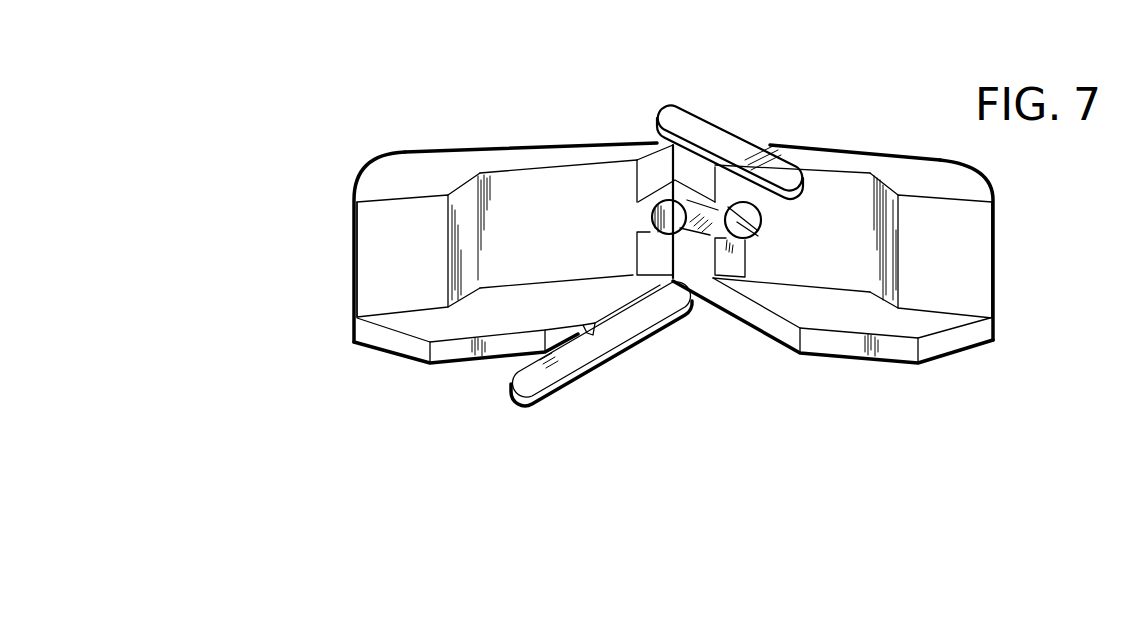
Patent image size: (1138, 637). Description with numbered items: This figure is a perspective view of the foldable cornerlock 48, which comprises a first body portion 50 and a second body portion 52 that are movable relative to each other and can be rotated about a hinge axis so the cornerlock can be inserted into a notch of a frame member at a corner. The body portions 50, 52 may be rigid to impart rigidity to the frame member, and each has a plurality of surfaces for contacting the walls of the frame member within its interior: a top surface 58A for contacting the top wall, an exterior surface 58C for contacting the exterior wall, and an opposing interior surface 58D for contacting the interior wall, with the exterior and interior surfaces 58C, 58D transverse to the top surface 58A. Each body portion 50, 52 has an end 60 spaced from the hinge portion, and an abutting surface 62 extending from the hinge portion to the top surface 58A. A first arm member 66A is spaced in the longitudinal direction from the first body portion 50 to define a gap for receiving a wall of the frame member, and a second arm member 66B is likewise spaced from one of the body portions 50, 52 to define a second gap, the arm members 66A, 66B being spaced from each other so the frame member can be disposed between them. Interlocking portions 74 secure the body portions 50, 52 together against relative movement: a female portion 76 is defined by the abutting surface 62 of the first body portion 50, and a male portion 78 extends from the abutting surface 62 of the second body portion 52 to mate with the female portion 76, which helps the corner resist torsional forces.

The foldable cornerlock 48 is at (562, 118).
The first body portion 50 is at (510, 212).
The second body portion 52 is at (828, 188).
The top surface 58A is at (427, 266).
The exterior surface 58C is at (452, 368).
The interior surface 58D is at (488, 152).
The end 60 is at (316, 268).
The abutting surface 62 is at (665, 266).
The first arm member 66A is at (548, 370).
The second arm member 66B is at (720, 137).
The interlocking portions 74 is at (654, 171).
The female portion 76 is at (743, 222).
The male portion 78 is at (662, 217).